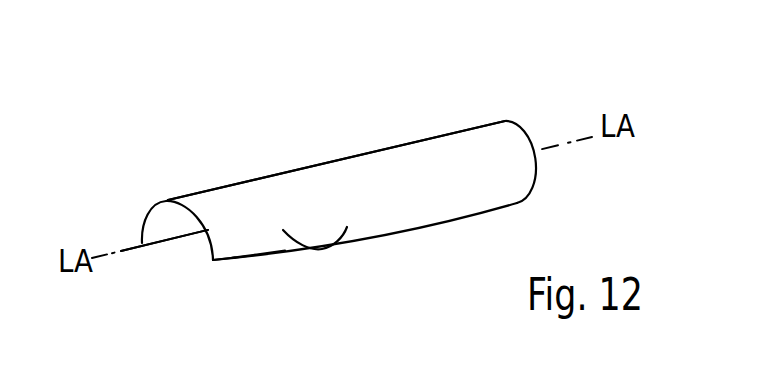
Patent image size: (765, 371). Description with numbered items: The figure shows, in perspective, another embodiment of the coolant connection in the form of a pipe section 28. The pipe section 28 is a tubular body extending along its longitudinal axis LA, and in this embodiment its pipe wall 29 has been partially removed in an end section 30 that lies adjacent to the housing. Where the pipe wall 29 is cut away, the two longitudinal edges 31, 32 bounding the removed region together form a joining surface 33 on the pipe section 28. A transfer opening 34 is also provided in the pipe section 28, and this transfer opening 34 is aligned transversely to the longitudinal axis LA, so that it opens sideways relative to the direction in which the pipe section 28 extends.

The pipe section 28 is at (453, 143).
The pipe wall 29 is at (298, 238).
The end section 30 is at (218, 198).
The longitudinal edge 31 is at (176, 241).
The longitudinal edge 32 is at (243, 256).
The joining surface 33 is at (266, 251).
The transfer opening 34 is at (228, 262).